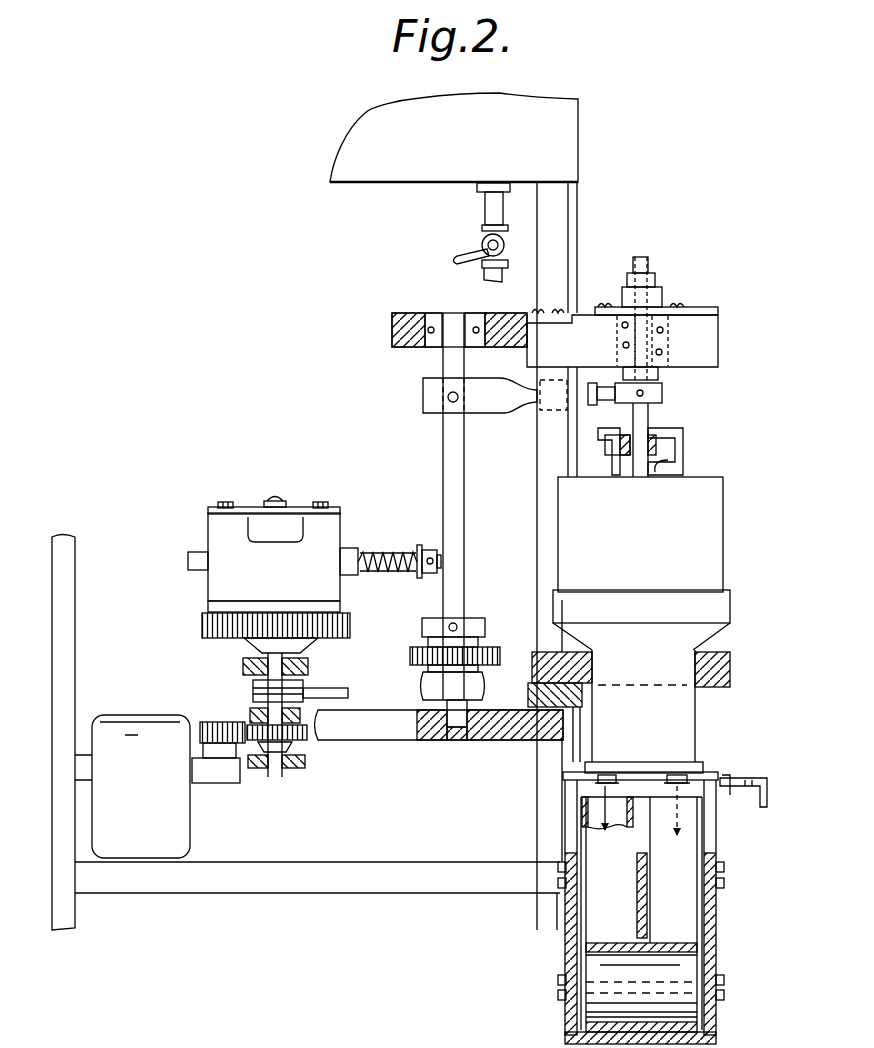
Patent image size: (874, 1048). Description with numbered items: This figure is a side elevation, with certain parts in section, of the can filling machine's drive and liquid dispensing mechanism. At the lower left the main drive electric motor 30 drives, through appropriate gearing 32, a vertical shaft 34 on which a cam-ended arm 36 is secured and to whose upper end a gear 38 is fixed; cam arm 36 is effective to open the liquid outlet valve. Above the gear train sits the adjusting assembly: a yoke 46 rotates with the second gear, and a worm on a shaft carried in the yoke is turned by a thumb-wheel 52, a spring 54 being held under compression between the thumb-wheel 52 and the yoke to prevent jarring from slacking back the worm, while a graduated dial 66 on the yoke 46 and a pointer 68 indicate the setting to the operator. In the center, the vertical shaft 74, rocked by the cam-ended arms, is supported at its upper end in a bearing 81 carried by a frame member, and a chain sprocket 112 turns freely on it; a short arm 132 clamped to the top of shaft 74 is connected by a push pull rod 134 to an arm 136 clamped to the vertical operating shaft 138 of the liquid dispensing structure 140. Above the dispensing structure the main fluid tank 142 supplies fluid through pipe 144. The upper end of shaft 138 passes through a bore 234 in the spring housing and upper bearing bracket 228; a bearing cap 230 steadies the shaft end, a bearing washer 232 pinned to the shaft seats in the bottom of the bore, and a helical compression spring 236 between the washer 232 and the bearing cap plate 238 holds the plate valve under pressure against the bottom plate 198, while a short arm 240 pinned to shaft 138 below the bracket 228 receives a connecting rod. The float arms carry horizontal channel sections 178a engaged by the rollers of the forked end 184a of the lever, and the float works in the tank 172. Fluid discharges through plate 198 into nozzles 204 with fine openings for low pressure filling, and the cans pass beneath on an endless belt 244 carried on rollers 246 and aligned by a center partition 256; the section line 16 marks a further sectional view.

The main fluid tank 142 is at (454, 137).
The pipe 144 is at (481, 221).
The bearing 81 is at (426, 313).
The vertical shaft 74 is at (450, 452).
The short arm 132 is at (423, 400).
The push pull rod 134 is at (533, 373).
The spring housing and upper bearing bracket 228 is at (580, 323).
The bearing cap plate 238 is at (690, 310).
The helical compression spring 236 is at (718, 357).
The bore 234 is at (660, 340).
The bearing cap 230 is at (650, 294).
The bearing washer 232 is at (658, 373).
The short arm 240 is at (665, 393).
The arm 136 is at (662, 403).
The vertical operating shaft 138 is at (648, 421).
The section line 16 is at (665, 415).
The horizontal channel sections 178a is at (684, 440).
The forked end 184a is at (672, 464).
The liquid dispensing structure 140 is at (696, 494).
The tank 172 is at (700, 518).
The plate 198 is at (700, 762).
The nozzles 204 is at (608, 773).
The endless belt 244 is at (707, 947).
The center partition 256 is at (637, 873).
The rollers 246 is at (587, 1005).
The yoke 46 is at (206, 540).
The graduated dial 66 is at (245, 506).
The pointer 68 is at (288, 500).
The spring 54 is at (387, 553).
The thumb-wheel 52 is at (415, 576).
The gear 38 is at (205, 628).
The vertical shaft 34 is at (275, 777).
The cam-ended arm 36 is at (336, 688).
The gearing 32 is at (238, 719).
The main drive electric motor 30 is at (174, 846).
The chain sprocket 112 is at (500, 650).